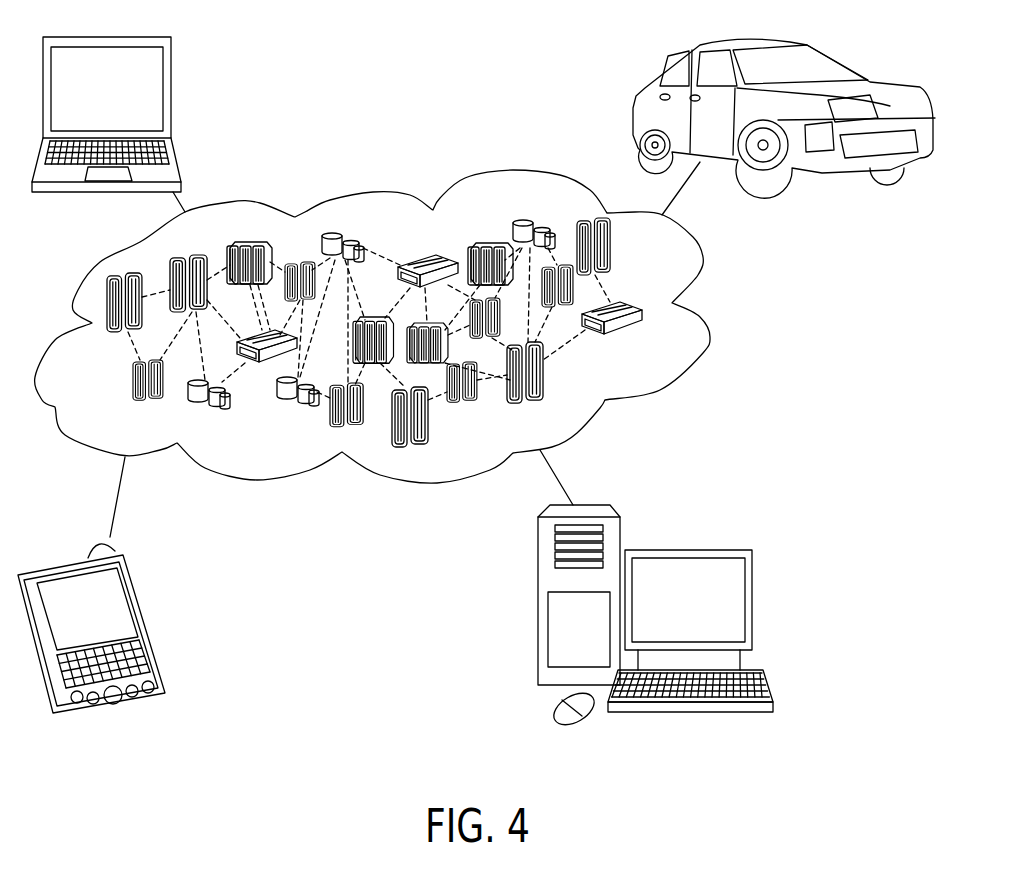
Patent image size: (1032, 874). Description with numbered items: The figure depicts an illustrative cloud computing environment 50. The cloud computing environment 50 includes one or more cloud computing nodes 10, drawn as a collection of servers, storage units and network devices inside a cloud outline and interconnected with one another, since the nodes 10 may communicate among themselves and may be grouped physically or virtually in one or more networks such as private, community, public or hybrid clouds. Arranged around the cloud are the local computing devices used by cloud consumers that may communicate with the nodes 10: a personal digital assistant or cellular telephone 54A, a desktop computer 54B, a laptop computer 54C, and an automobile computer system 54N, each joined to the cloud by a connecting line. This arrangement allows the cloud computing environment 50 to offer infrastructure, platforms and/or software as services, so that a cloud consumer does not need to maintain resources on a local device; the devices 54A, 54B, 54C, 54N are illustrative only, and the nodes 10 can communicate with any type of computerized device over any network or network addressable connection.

The cloud computing node 10 is at (667, 362).
The cloud computing environment 50 is at (705, 258).
The personal digital assistant or cellular telephone 54A is at (141, 597).
The desktop computer 54B is at (752, 598).
The laptop computer 54C is at (170, 92).
The automobile computer system 54N is at (820, 58).